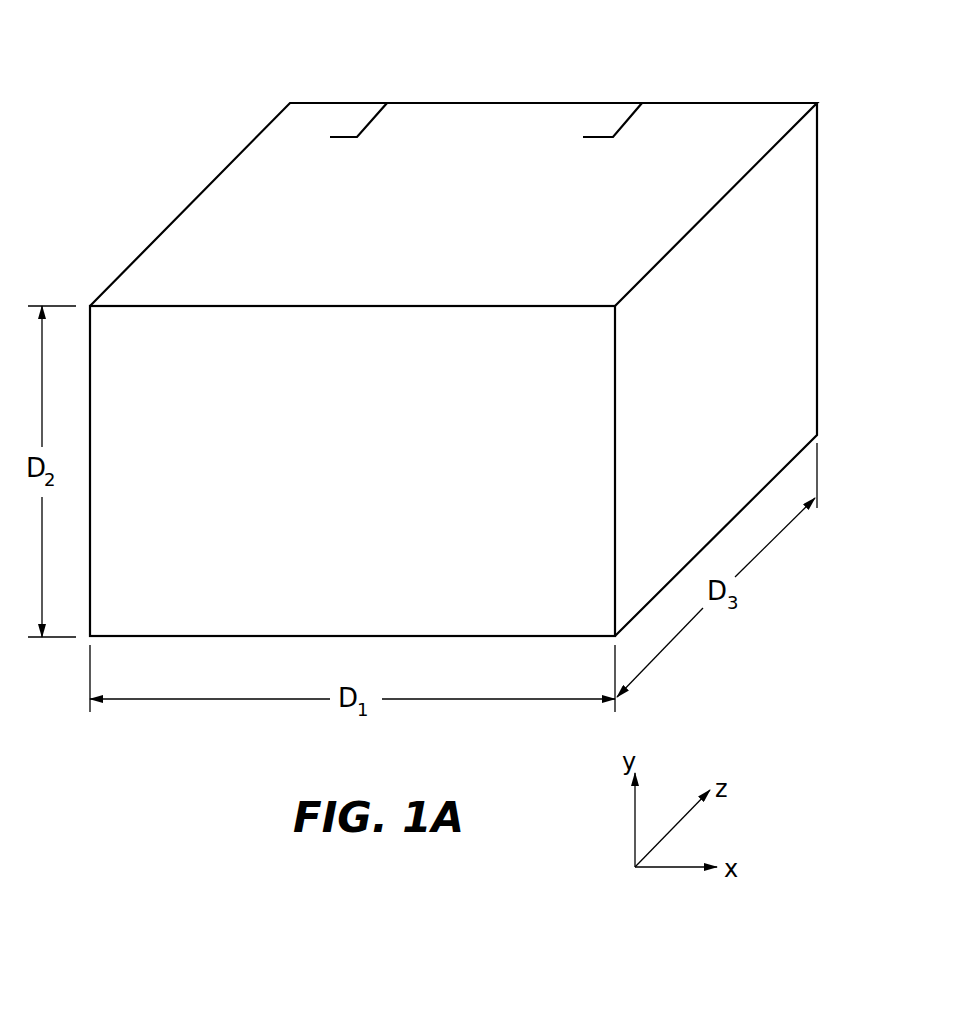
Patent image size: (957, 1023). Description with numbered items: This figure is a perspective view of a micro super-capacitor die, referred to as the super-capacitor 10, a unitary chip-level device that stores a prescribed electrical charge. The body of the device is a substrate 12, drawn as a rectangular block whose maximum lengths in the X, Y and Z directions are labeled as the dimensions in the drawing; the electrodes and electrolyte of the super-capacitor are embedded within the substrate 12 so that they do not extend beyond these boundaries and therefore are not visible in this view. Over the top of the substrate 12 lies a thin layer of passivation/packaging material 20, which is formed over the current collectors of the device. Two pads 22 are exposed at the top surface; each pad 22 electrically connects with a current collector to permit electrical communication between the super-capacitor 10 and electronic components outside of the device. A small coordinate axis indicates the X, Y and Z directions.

The super-capacitor 10 is at (206, 127).
The substrate 12 is at (343, 502).
The passivation/packaging material 20 is at (448, 229).
The pad 22 is at (367, 117).